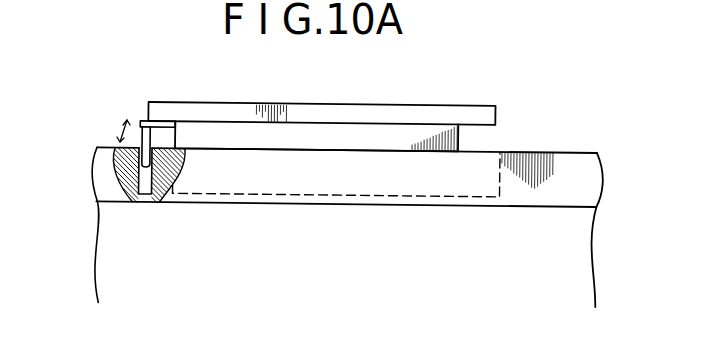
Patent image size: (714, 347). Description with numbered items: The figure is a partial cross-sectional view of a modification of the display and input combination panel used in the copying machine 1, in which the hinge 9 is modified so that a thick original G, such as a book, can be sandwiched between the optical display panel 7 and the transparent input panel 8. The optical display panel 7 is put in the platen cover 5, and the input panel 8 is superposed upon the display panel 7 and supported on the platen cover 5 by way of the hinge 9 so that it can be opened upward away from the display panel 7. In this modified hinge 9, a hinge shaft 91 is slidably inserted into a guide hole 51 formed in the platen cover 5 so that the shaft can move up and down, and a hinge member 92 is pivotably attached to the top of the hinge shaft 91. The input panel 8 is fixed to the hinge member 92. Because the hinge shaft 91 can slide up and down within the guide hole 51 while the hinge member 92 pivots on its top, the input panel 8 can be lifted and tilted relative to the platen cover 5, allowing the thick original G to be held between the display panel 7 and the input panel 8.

The copying machine 1 is at (599, 300).
The platen cover 5 is at (555, 153).
The guide hole 51 is at (144, 181).
The optical display panel 7 is at (330, 181).
The input panel 8 is at (443, 107).
The original G is at (347, 133).
The hinge 9 is at (140, 122).
The hinge shaft 91 is at (150, 133).
The hinge member 92 is at (165, 122).